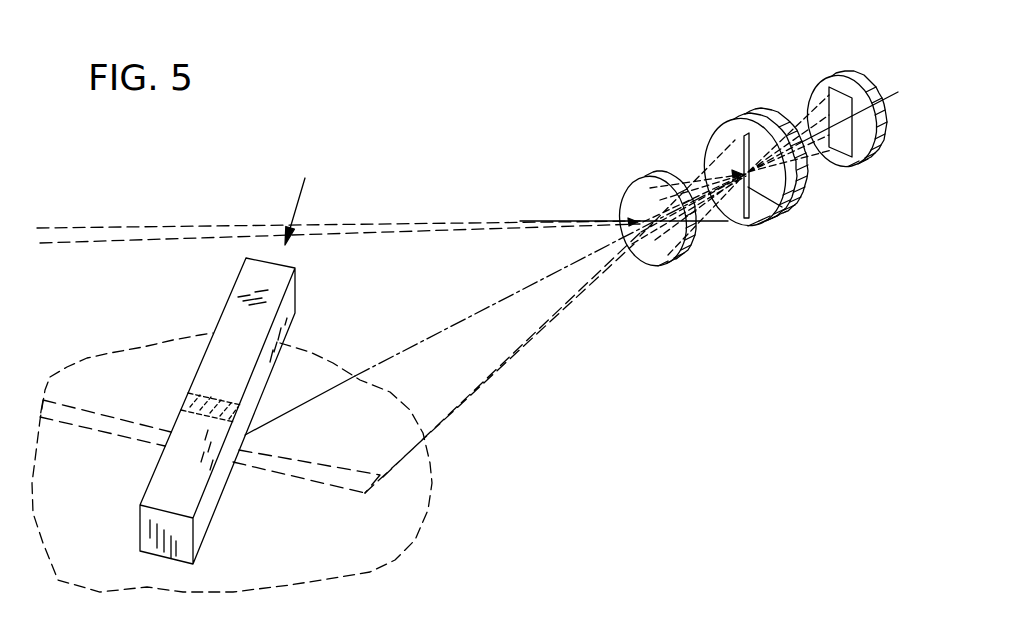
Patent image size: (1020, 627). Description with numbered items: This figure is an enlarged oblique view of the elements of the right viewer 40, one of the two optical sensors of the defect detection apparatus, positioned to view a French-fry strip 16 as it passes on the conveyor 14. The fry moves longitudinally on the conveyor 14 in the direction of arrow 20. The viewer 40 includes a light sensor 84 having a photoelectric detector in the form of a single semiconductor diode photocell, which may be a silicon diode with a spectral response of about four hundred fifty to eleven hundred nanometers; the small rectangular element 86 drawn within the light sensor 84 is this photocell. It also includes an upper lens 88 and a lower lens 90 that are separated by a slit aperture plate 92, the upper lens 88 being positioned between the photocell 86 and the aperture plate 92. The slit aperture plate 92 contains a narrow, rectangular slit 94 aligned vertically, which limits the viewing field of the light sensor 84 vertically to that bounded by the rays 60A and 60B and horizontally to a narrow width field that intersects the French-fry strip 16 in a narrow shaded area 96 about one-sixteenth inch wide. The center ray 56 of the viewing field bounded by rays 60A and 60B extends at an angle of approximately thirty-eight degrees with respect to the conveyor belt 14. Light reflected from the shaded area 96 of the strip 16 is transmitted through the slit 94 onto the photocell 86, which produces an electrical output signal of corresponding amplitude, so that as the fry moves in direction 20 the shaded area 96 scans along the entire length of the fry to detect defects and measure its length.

The conveyor 14 is at (294, 551).
The French-fry strip 16 is at (220, 315).
The direction of movement 20 is at (302, 196).
The right viewer 40 is at (640, 85).
The center ray 56 is at (320, 393).
The ray 60A is at (210, 228).
The ray 60B is at (453, 417).
The light sensor 84 is at (867, 88).
The aperture 86 is at (843, 142).
The upper lens 88 is at (764, 112).
The lower lens 90 is at (655, 258).
The slit aperture plate 92 is at (760, 213).
The slit 94 is at (782, 207).
The shaded area 96 is at (187, 395).